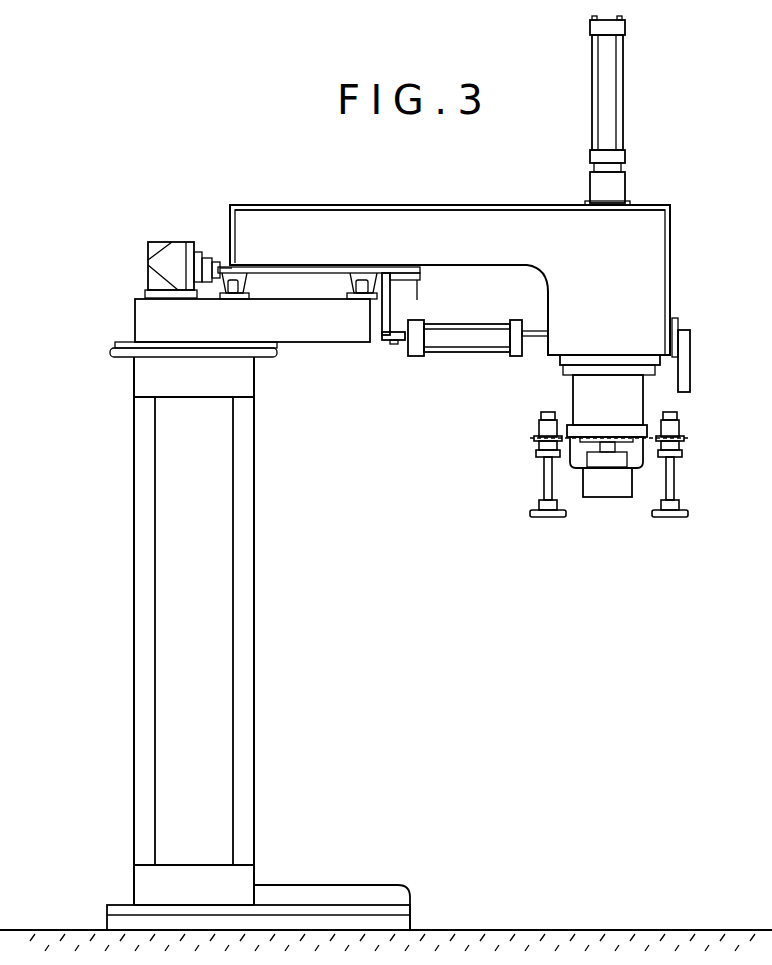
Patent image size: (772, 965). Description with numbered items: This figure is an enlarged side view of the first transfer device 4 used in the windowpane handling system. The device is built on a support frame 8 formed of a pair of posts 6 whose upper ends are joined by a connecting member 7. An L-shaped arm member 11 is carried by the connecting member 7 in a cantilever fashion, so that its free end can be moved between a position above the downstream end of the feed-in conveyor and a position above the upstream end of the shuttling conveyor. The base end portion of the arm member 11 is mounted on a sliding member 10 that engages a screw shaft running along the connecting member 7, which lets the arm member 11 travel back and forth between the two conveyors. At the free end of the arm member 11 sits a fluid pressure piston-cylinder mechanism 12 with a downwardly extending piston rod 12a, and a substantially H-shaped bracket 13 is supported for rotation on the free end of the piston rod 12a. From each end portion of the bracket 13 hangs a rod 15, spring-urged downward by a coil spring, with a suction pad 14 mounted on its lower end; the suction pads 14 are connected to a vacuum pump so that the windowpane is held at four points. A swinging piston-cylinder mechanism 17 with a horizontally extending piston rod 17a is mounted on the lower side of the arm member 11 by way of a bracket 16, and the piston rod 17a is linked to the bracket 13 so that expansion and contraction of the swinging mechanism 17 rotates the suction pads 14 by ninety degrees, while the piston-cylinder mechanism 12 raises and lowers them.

The first transfer device 4 is at (331, 197).
The posts 6 is at (228, 717).
The connecting member 7 is at (140, 373).
The support frame 8 is at (133, 537).
The sliding member 10 is at (178, 250).
The arm member 11 is at (448, 213).
The fluid pressure piston-cylinder mechanism 12 is at (624, 92).
The piston rod 12a is at (615, 470).
The bracket 13 is at (642, 470).
The suction pad 14 is at (540, 520).
The rod 15 is at (538, 481).
The bracket 16 is at (396, 322).
The swinging piston-cylinder mechanism 17 is at (458, 344).
The piston rod 17a is at (538, 340).